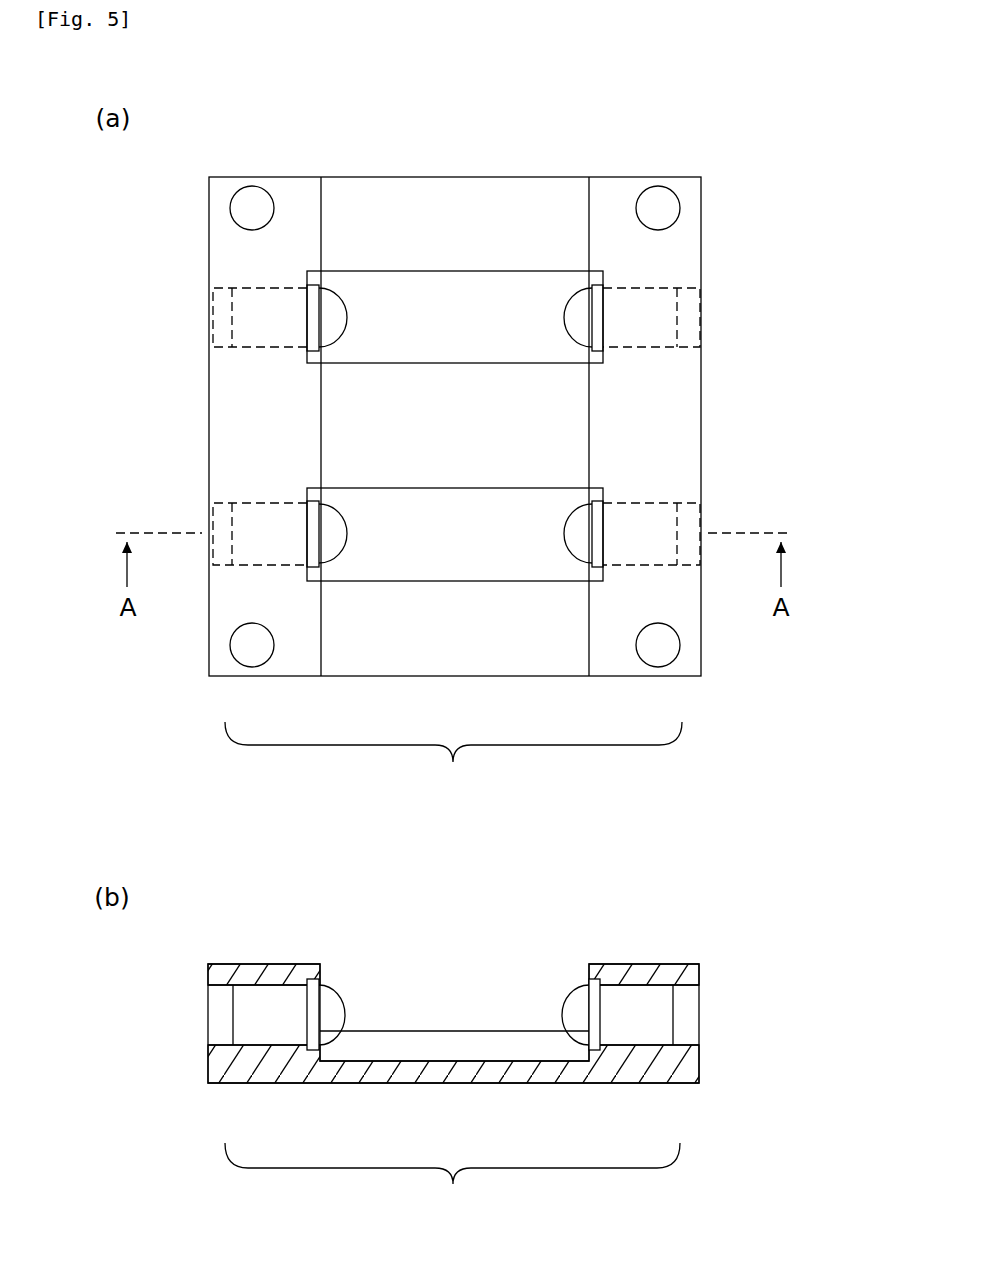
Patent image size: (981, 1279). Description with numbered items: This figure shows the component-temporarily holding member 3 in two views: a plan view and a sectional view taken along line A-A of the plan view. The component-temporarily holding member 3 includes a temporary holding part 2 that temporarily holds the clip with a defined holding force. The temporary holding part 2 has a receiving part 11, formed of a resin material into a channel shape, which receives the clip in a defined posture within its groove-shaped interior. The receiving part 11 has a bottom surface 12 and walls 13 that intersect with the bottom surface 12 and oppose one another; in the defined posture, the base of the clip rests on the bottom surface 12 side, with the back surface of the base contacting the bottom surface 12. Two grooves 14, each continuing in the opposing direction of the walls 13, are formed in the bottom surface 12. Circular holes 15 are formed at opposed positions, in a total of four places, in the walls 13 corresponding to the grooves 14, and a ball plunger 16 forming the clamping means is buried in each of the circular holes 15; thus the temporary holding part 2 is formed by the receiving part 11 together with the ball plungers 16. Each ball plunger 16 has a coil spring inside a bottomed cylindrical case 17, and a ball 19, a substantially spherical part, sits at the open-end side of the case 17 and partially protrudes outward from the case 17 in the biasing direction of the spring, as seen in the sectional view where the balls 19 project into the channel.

The temporary holding part 2 is at (453, 969).
The component-temporarily holding member 3 is at (714, 147).
The receiving part 11 is at (549, 192).
The bottom surface 12 is at (328, 408).
The walls 13 is at (222, 443).
The grooves 14 is at (487, 300).
The circular holes 15 is at (215, 292).
The ball plunger 16 is at (222, 320).
The case 17 is at (282, 286).
The ball 19 is at (337, 335).